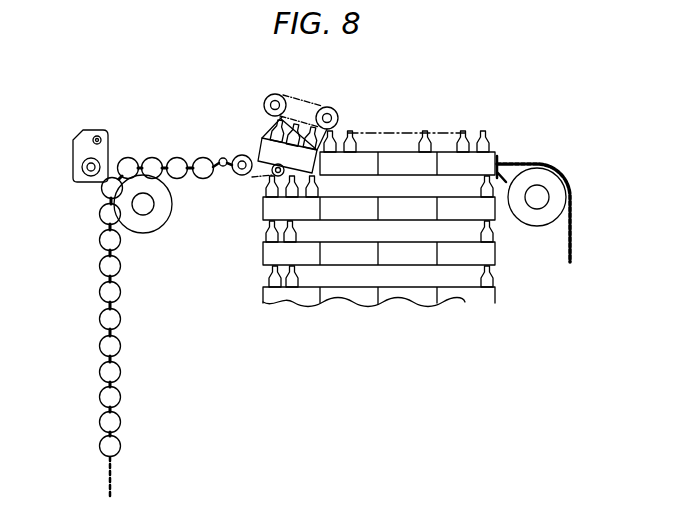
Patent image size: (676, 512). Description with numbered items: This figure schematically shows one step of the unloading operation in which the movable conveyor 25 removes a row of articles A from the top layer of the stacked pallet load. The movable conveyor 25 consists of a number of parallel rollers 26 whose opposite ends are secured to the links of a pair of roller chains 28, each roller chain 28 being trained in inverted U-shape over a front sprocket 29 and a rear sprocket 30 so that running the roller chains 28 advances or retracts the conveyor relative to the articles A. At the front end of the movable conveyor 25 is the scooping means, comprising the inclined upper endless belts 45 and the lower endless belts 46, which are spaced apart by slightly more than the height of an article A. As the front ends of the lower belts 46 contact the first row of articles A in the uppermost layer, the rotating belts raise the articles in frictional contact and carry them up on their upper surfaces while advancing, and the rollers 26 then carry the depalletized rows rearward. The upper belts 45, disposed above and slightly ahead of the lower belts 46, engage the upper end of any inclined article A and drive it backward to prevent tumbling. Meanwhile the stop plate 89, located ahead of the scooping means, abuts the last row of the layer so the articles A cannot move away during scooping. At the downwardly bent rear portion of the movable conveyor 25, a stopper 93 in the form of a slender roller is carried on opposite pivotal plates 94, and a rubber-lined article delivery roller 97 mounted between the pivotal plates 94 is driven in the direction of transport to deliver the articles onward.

The movable conveyor 25 is at (166, 301).
The rollers 26 is at (132, 160).
The roller chains 28 is at (112, 470).
The sprocket 29 is at (537, 226).
The sprocket 30 is at (156, 225).
The upper endless belts 45 is at (306, 99).
The lower endless belts 46 is at (242, 178).
The stop plate 89 is at (498, 161).
The stopper 93 is at (97, 136).
The pivotal plates 94 is at (76, 144).
The article delivery roller 97 is at (84, 170).
The articles A is at (407, 150).